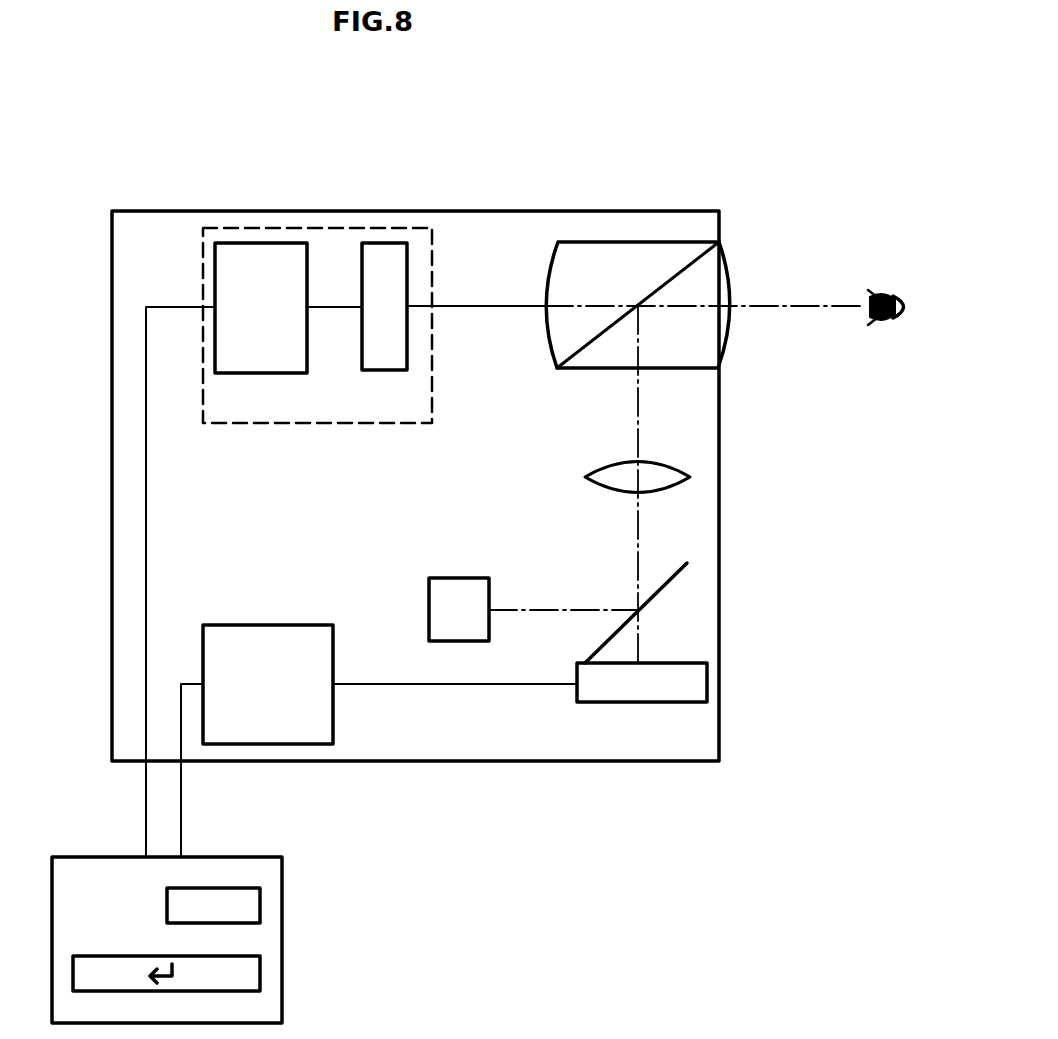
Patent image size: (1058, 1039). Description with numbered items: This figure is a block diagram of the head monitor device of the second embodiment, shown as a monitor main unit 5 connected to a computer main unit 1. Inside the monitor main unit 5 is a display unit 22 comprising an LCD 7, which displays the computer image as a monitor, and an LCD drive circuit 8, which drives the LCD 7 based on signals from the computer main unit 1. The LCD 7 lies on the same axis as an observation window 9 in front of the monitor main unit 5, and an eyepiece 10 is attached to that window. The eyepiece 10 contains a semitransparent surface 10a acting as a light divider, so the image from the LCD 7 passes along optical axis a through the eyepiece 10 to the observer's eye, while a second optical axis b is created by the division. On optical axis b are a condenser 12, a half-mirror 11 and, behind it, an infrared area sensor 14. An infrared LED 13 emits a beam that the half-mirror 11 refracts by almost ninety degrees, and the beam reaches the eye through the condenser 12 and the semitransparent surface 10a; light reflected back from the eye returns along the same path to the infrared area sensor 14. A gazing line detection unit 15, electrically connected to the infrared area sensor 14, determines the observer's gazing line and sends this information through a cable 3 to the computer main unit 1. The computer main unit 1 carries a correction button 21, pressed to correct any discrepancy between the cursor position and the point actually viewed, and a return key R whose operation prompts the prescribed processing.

The computer main unit 1 is at (282, 888).
The cable 3 is at (181, 811).
The monitor main unit 5 is at (280, 211).
The LCD 7 is at (407, 258).
The LCD drive circuit 8 is at (215, 255).
The observation window 9 is at (735, 262).
The eyepiece 10 is at (580, 242).
The semitransparent surface 10a is at (667, 278).
The half-mirror 11 is at (664, 585).
The condenser 12 is at (690, 477).
The infrared LED 13 is at (463, 578).
The infrared area sensor 14 is at (590, 702).
The gazing line detection unit 15 is at (273, 625).
The correction button 21 is at (260, 914).
The display unit 22 is at (404, 228).
The optical axis a is at (800, 305).
The optical axis b is at (638, 523).
The return key R is at (260, 980).